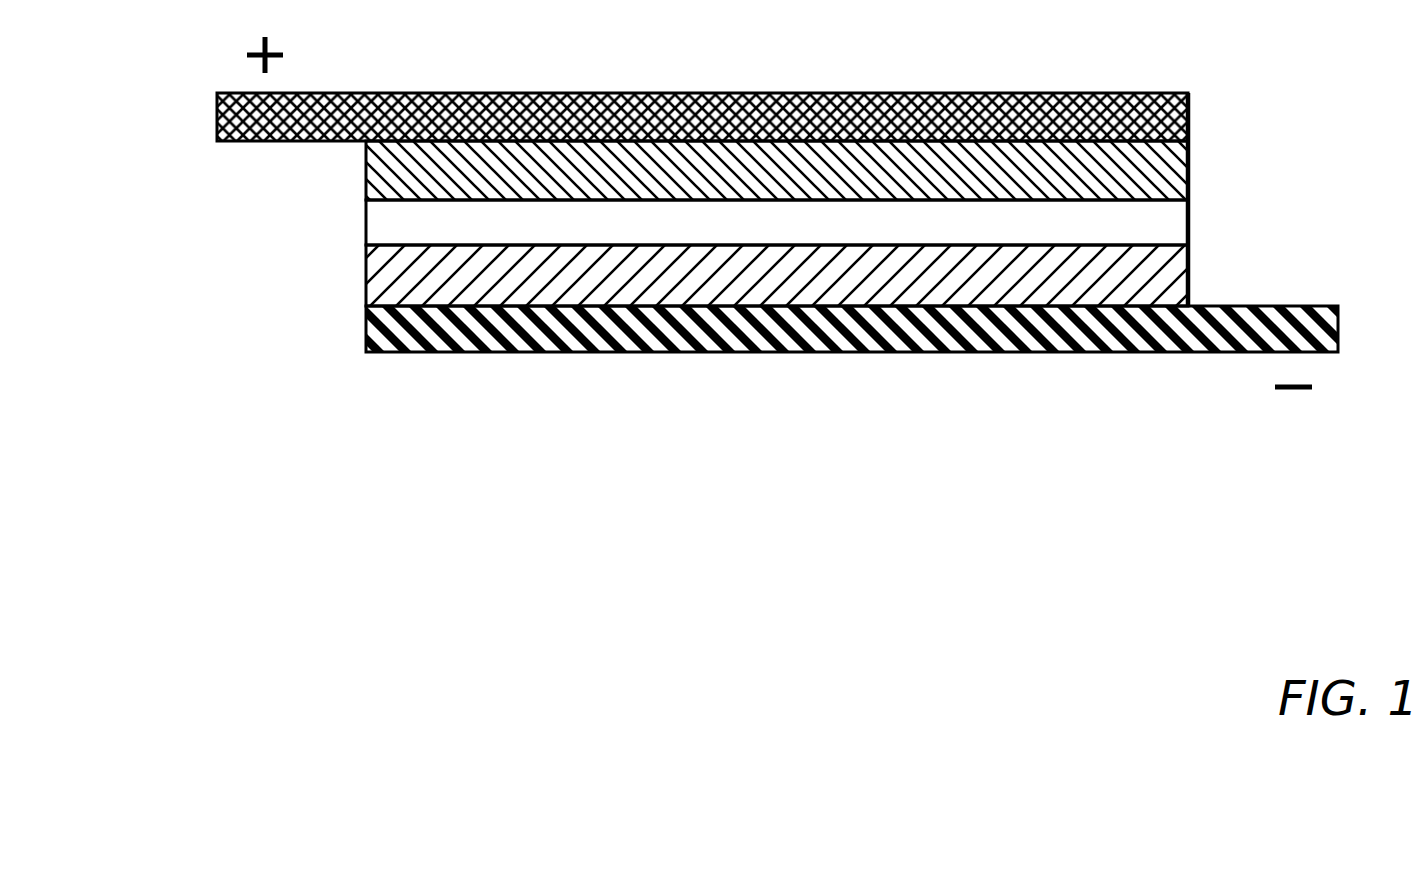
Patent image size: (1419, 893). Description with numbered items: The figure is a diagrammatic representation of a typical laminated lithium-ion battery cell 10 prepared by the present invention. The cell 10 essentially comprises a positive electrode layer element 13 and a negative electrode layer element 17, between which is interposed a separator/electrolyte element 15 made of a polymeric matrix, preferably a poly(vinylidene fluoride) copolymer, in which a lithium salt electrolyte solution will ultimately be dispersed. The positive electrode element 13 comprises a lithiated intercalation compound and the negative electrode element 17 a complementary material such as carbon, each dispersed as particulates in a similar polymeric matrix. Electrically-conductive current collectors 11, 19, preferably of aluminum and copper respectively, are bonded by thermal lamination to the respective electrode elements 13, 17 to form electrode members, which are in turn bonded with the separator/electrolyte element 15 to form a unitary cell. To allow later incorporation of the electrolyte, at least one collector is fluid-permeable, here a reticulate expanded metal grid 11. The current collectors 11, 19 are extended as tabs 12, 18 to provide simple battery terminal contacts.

The cell 10 is at (703, 388).
The current collector 11 is at (1190, 121).
The tab 12 is at (217, 119).
The positive electrode layer element 13 is at (1190, 170).
The separator/electrolyte element 15 is at (1182, 228).
The negative electrode layer element 17 is at (366, 275).
The tab 18 is at (1336, 334).
The current collector 19 is at (366, 325).